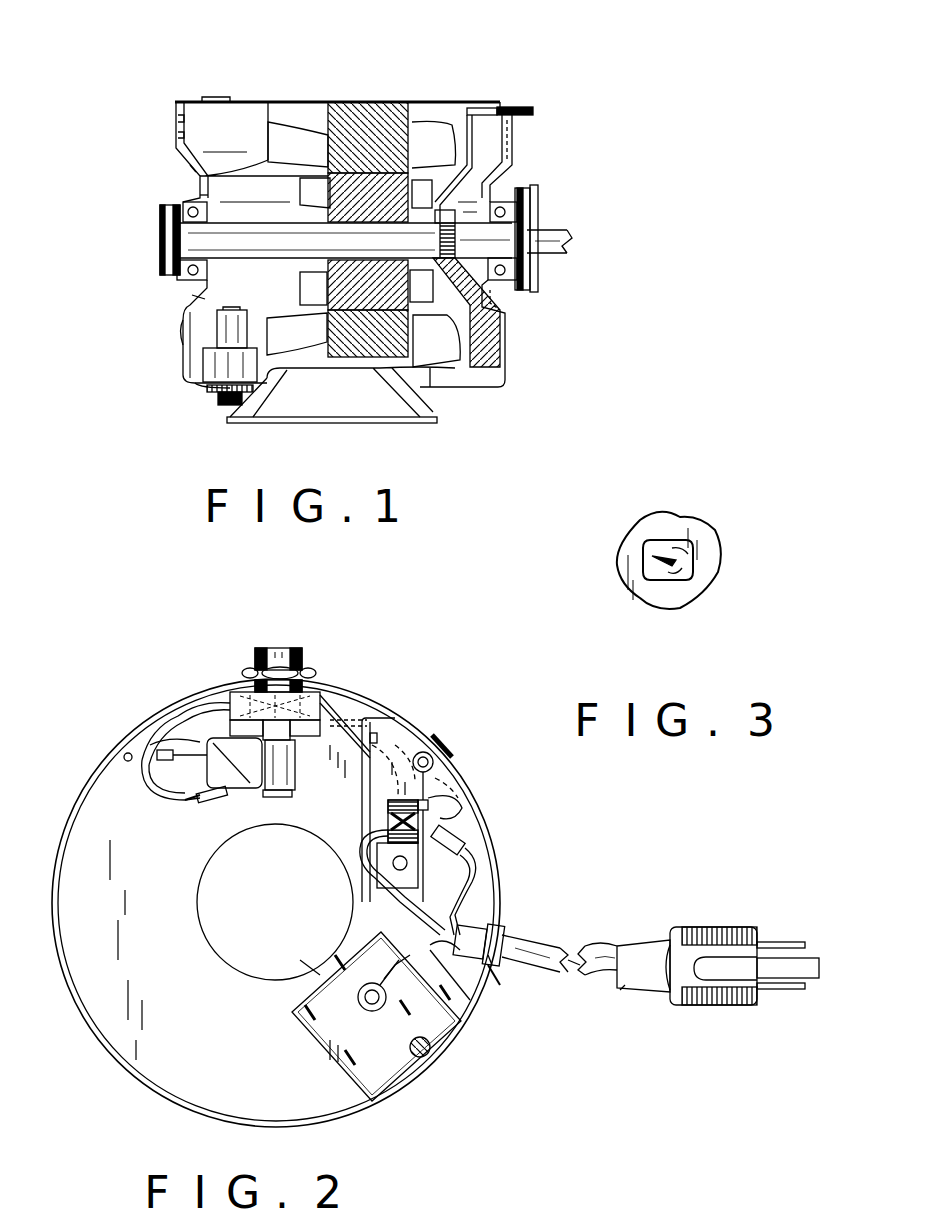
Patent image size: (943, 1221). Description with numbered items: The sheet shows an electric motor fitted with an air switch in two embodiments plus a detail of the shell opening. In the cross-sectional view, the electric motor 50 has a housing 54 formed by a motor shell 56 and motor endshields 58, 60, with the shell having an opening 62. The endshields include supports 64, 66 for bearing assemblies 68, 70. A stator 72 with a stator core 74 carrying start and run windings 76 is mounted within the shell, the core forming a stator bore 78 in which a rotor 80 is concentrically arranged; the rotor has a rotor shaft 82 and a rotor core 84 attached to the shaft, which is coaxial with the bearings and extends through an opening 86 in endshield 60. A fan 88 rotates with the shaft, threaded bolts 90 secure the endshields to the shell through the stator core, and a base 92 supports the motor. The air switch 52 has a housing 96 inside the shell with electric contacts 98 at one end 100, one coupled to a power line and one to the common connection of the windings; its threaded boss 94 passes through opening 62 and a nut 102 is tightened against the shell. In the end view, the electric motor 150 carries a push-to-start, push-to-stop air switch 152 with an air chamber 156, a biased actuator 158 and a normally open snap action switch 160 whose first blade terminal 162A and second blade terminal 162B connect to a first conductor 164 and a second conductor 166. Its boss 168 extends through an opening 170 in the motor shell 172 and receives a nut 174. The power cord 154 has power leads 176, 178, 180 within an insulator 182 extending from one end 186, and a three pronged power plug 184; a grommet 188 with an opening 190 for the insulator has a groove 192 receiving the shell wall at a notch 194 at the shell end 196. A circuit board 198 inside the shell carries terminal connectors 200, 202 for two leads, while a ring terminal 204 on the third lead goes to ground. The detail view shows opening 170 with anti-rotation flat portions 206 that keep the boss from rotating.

In FIG. 1, the electric motor 50 is at (503, 75).
In FIG. 1, the air switch 52 is at (200, 331).
In FIG. 1, the housing 54 is at (265, 92).
In FIG. 1, the motor shell 56 is at (375, 102).
In FIG. 1, the motor endshield 58 is at (178, 145).
In FIG. 1, the motor endshield 60 is at (520, 142).
In FIG. 1, the opening 62 is at (200, 390).
In FIG. 1, the support 64 is at (190, 264).
In FIG. 1, the support 66 is at (505, 285).
In FIG. 1, the bearing assembly 68 is at (190, 210).
In FIG. 1, the bearing assembly 70 is at (512, 185).
In FIG. 1, the stator 72 is at (255, 120).
In FIG. 1, the stator core 74 is at (438, 103).
In FIG. 1, the start and run windings 76 is at (205, 178).
In FIG. 1, the stator bore 78 is at (262, 187).
In FIG. 1, the rotor 80 is at (284, 278).
In FIG. 1, the rotor shaft 82 is at (195, 294).
In FIG. 1, the rotor core 84 is at (510, 338).
In FIG. 1, the opening 86 is at (535, 226).
In FIG. 1, the fan 88 is at (480, 388).
In FIG. 1, the threaded bolts 90 is at (535, 112).
In FIG. 1, the base 92 is at (415, 423).
In FIG. 1, the boss 94 is at (222, 408).
In FIG. 1, the housing 96 is at (215, 365).
In FIG. 1, the electric contacts 98 is at (225, 306).
In FIG. 1, the end 100 is at (205, 301).
In FIG. 1, the nut 102 is at (215, 392).
In FIG. 2, the electric motor 150 is at (392, 674).
In FIG. 2, the air switch 152 is at (218, 672).
In FIG. 2, the power cord 154 is at (602, 1000).
In FIG. 2, the air chamber 156 is at (350, 690).
In FIG. 2, the actuator 158 is at (300, 775).
In FIG. 2, the snap action switch 160 is at (185, 805).
In FIG. 2, the first blade terminal 162A is at (245, 825).
In FIG. 2, the second blade terminal 162B is at (124, 758).
In FIG. 2, the first conductor 164 is at (140, 790).
In FIG. 2, the second conductor 166 is at (150, 738).
In FIG. 2, the boss 168 is at (265, 655).
In FIG. 3, the opening 170 is at (672, 565).
In FIG. 2, the opening 170 is at (323, 688).
In FIG. 3, the motor shell 172 is at (663, 523).
In FIG. 2, the motor shell 172 is at (165, 723).
In FIG. 2, the nut 174 is at (235, 670).
In FIG. 2, the power lead 176 is at (455, 895).
In FIG. 2, the power lead 178 is at (452, 920).
In FIG. 2, the power lead 180 is at (470, 955).
In FIG. 2, the insulator 182 is at (560, 965).
In FIG. 2, the three pronged power plug 184 is at (675, 942).
In FIG. 2, the end 186 is at (460, 937).
In FIG. 2, the grommet 188 is at (500, 972).
In FIG. 2, the opening 190 is at (497, 935).
In FIG. 2, the groove 192 is at (505, 942).
In FIG. 2, the notch 194 is at (488, 958).
In FIG. 2, the end 196 is at (433, 950).
In FIG. 2, the circuit board 198 is at (400, 1052).
In FIG. 2, the terminal connector 200 is at (455, 840).
In FIG. 2, the terminal connector 202 is at (345, 822).
In FIG. 2, the ring terminal 204 is at (370, 1010).
In FIG. 3, the anti-rotation flat portions 206 is at (690, 551).